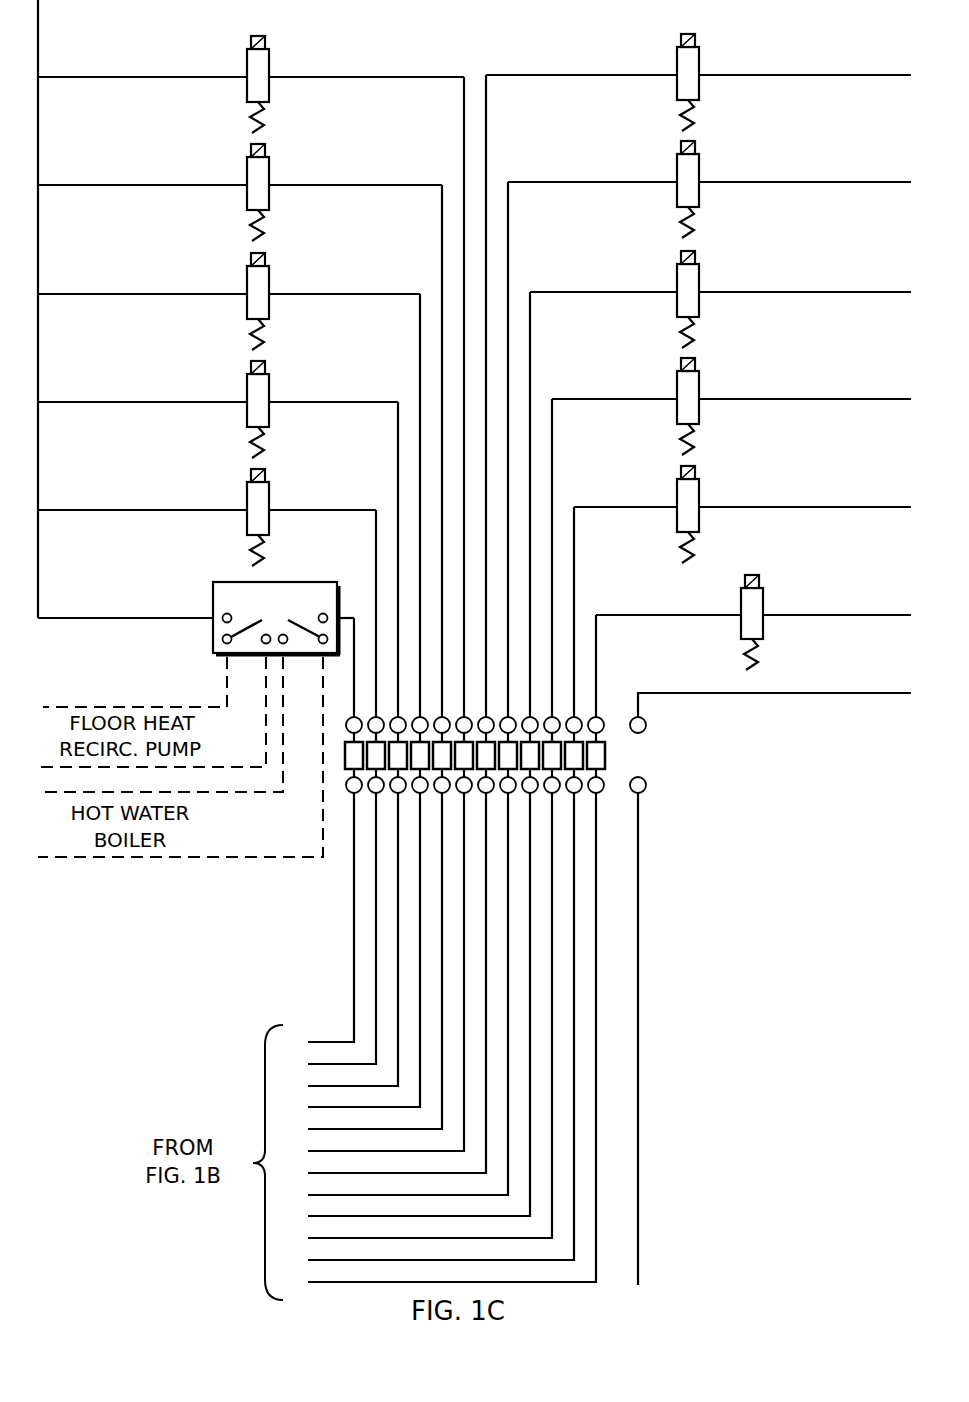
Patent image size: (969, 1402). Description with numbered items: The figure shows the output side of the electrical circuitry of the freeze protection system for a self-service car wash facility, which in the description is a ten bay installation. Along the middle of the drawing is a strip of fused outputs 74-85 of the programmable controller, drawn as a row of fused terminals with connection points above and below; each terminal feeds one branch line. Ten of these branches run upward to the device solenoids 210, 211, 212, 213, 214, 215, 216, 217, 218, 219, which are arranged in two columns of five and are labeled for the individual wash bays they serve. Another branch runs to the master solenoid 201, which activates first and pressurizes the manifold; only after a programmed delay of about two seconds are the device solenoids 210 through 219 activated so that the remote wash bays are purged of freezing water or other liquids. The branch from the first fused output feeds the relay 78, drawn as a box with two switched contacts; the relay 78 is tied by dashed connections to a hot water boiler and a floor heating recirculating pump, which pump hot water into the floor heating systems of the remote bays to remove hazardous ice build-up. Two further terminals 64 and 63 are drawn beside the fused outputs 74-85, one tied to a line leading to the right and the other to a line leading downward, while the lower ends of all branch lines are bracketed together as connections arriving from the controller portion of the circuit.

The device solenoid 210 is at (269, 55).
The device solenoid 211 is at (269, 163).
The device solenoid 212 is at (269, 272).
The device solenoid 213 is at (269, 380).
The device solenoid 214 is at (269, 488).
The device solenoid 215 is at (677, 52).
The device solenoid 216 is at (677, 159).
The device solenoid 217 is at (677, 269).
The device solenoid 218 is at (677, 376).
The device solenoid 219 is at (677, 484).
The master solenoid 201 is at (764, 600).
The relay 78 is at (305, 582).
The fused outputs 74-85 is at (606, 757).
The terminal 64 is at (647, 725).
The terminal 63 is at (645, 789).